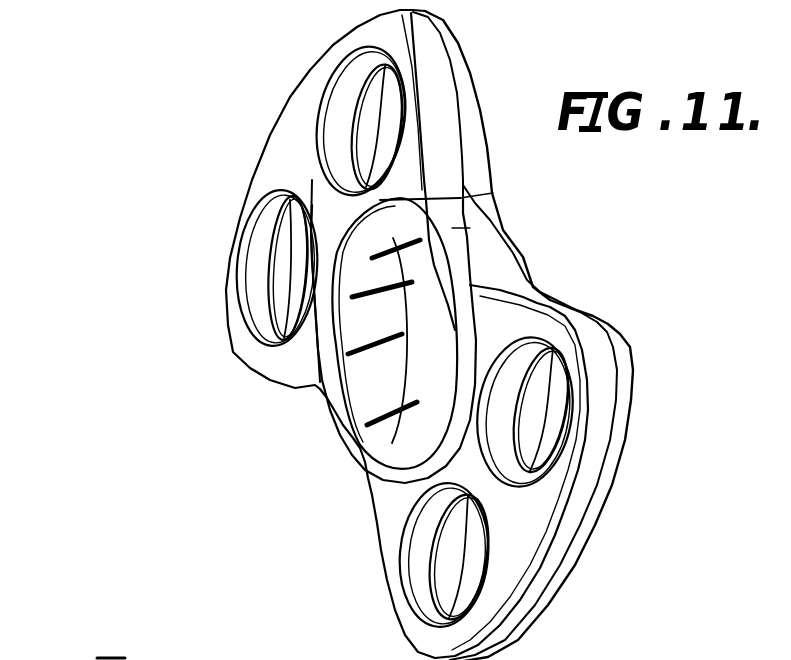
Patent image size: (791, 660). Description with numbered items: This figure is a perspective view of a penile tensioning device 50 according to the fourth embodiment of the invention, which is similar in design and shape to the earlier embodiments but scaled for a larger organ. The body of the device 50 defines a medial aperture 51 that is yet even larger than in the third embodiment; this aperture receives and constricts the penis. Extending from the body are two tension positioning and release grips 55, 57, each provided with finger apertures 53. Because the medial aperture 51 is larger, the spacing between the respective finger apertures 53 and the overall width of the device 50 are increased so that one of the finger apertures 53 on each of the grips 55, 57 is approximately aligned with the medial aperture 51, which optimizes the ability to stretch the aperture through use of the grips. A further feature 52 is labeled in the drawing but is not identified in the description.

The penile tensioning device 50 is at (192, 184).
The medial aperture 51 is at (534, 344).
The threaded central hole 52 is at (383, 352).
The finger apertures 53 is at (402, 527).
The tension positioning and release grip 55 is at (228, 300).
The tension positioning and release grip 57 is at (588, 398).